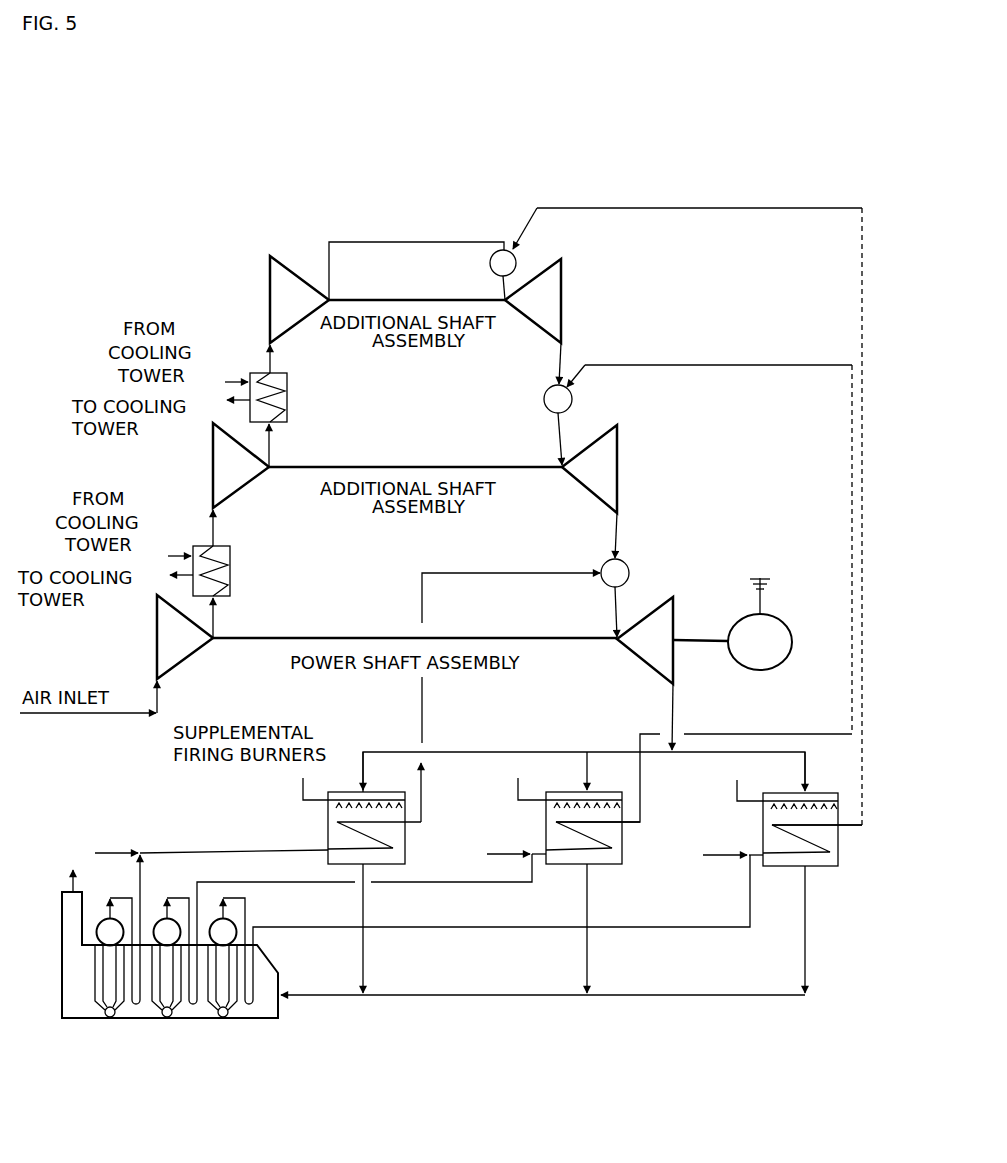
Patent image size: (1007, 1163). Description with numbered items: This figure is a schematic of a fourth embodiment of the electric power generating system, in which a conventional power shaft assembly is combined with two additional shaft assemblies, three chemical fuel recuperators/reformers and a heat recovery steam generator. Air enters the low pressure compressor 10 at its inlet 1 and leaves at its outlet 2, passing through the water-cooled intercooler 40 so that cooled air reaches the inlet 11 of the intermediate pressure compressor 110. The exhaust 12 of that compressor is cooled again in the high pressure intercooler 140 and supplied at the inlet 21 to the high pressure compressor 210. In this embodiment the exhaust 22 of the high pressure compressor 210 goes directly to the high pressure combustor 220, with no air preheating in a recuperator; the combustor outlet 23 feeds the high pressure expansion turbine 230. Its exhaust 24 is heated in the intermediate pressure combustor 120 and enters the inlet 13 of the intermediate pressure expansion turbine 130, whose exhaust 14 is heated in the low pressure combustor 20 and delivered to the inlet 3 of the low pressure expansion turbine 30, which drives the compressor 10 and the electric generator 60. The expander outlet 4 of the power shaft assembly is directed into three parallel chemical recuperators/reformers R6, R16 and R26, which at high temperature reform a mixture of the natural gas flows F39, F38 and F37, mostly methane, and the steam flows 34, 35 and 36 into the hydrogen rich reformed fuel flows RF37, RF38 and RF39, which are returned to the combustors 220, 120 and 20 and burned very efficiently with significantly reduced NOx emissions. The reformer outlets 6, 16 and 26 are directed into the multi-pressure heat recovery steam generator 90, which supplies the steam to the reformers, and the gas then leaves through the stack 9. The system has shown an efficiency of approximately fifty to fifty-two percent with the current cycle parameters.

The inlet of low pressure compressor 1 is at (158, 709).
The outlet of low pressure compressor 2 is at (225, 615).
The inlet of low pressure expansion turbine 3 is at (612, 610).
The exhaust of low pressure expansion turbine 4 is at (680, 723).
The chemical recuperator/reformer outlet 6 is at (348, 954).
The stack gas outlet 9 is at (80, 887).
The low pressure compressor 10 is at (152, 642).
The inlet of intermediate pressure compressor 11 is at (222, 518).
The exhaust of intermediate pressure compressor 12 is at (280, 441).
The inlet of intermediate pressure expansion turbine 13 is at (555, 436).
The exhaust of intermediate pressure expansion turbine 14 is at (612, 532).
The chemical recuperator/reformer outlet 16 is at (573, 954).
The low pressure combustor 20 is at (632, 572).
The inlet of high pressure compressor 21 is at (281, 353).
The exhaust of high pressure compressor 22 is at (412, 247).
The outlet of high pressure combustor 23 is at (500, 290).
The exhaust of high pressure expansion turbine 24 is at (556, 360).
The chemical recuperator/reformer outlet 26 is at (793, 950).
The low pressure expansion turbine 30 is at (677, 618).
The steam flow 34 is at (498, 875).
The steam flow 35 is at (133, 863).
The steam flow 36 is at (705, 917).
The intercooler 40 is at (232, 565).
The electric generator 60 is at (785, 618).
The multi-pressure heat recovery steam generator 90 is at (268, 968).
The intermediate pressure compressor 110 is at (208, 458).
The intermediate pressure combustor 120 is at (573, 400).
The intermediate pressure expansion turbine 130 is at (619, 452).
The high pressure intercooler 140 is at (289, 396).
The high pressure compressor 210 is at (266, 302).
The high pressure combustor 220 is at (514, 255).
The high pressure expansion turbine 230 is at (562, 283).
The chemical recuperator/reformer R6 is at (406, 868).
The chemical recuperator/reformer R16 is at (624, 868).
The chemical recuperator/reformer R26 is at (841, 868).
The reformed fuel flow RF37 is at (730, 218).
The reformed fuel flow RF38 is at (710, 378).
The reformed fuel flow RF39 is at (495, 583).
The natural gas flow F37 is at (735, 865).
The natural gas flow F38 is at (523, 865).
The natural gas flow F39 is at (120, 870).